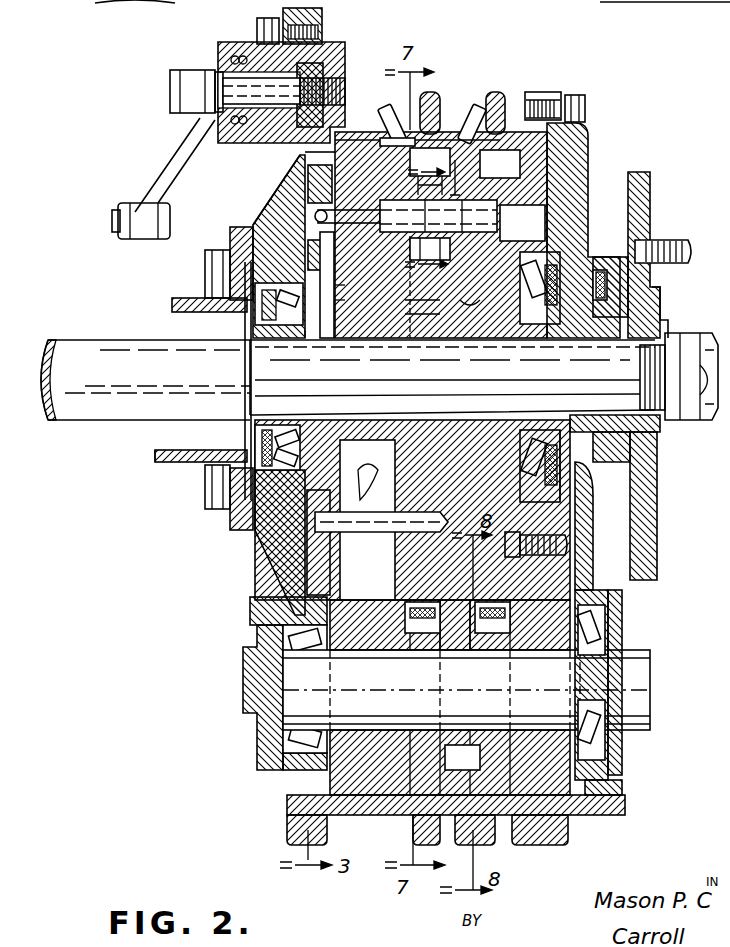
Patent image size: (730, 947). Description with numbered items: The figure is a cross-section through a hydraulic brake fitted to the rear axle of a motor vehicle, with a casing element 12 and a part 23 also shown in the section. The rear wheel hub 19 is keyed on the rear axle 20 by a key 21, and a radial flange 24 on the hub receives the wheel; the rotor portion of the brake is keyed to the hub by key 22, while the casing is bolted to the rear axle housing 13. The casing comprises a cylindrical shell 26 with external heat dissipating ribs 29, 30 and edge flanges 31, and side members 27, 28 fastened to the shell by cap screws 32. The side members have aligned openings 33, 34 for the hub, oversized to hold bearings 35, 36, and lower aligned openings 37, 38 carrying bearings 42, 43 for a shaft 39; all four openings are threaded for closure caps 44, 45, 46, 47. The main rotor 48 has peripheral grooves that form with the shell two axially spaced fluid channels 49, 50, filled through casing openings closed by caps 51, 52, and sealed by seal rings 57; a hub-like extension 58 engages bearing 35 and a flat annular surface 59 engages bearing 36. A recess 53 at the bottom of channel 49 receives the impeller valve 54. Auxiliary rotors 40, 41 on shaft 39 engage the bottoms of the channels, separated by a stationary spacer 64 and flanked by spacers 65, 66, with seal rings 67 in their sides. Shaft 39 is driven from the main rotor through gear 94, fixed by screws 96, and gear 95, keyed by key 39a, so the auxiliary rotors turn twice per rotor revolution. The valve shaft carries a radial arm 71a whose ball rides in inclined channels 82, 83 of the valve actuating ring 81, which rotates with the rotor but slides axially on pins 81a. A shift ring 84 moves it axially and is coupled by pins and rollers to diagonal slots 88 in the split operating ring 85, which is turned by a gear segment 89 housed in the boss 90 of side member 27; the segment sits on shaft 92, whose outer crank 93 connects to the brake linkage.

The housing 12 is at (168, 8).
The rear axle housing 13 is at (190, 298).
The rear wheel hub 19 is at (606, 340).
The rear axle 20 is at (115, 340).
The key 21 is at (437, 216).
The key 22 is at (695, 250).
The bushing 23 is at (522, 223).
The radial flange 24 is at (686, 302).
The cylindrical shell 26 is at (380, 146).
The side member 27 is at (290, 176).
The side member 28 is at (590, 160).
The heat dissipating rib 29 is at (430, 96).
The heat dissipating rib 30 is at (492, 94).
The flange 31 is at (322, 22).
The cap screw 32 is at (264, 22).
The opening 33 is at (282, 284).
The opening 34 is at (590, 268).
The bearing 35 is at (350, 288).
The bearing 36 is at (522, 280).
The opening 37 is at (290, 596).
The opening 38 is at (583, 577).
The shaft 39 is at (466, 689).
The key 39a is at (592, 690).
The auxiliary rotor 40 is at (436, 640).
The auxiliary rotor 41 is at (498, 640).
The bearing 42 is at (262, 613).
The bearing 43 is at (621, 610).
The closure cap 44 is at (224, 524).
The closure cap 45 is at (640, 462).
The closure cap 46 is at (250, 645).
The closure cap 47 is at (621, 712).
The main rotor 48 is at (460, 420).
The fluid channel 49 is at (452, 178).
The fluid channel 50 is at (500, 164).
The cap 51 is at (392, 128).
The cap 52 is at (390, 140).
The recess 53 is at (455, 248).
The impeller valve 54 is at (422, 304).
The seal ring 57 is at (464, 640).
The hub-like extension 58 is at (336, 304).
The flat annular surface 59 is at (466, 300).
The stationary spacer 64 is at (465, 805).
The stationary spacer 65 is at (380, 800).
The stationary spacer 66 is at (570, 815).
The seal ring 67 is at (460, 686).
The radially extending arm 71a is at (335, 262).
The valve actuating ring 81 is at (300, 160).
The pin 81a is at (396, 511).
The channel 82 is at (280, 200).
The channel 83 is at (320, 154).
The shift ring 84 is at (336, 186).
The operating ring 85 is at (334, 272).
The diagonal slot 88 is at (367, 520).
The gear segment 89 is at (326, 74).
The boss 90 is at (292, 84).
The shaft 92 is at (257, 91).
The crank 93 is at (195, 150).
The gear 94 is at (582, 196).
The gear 95 is at (600, 784).
The screw 96 is at (535, 540).